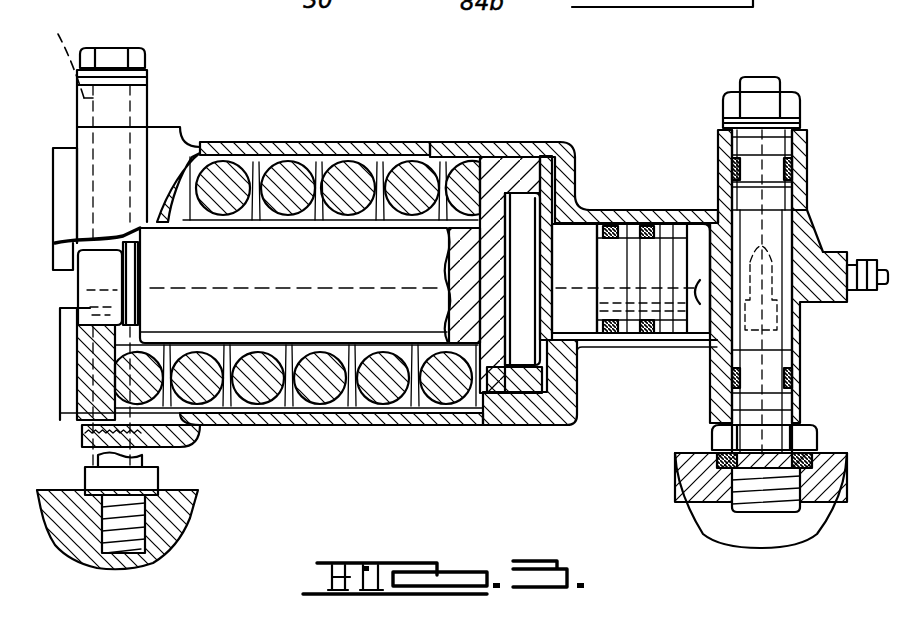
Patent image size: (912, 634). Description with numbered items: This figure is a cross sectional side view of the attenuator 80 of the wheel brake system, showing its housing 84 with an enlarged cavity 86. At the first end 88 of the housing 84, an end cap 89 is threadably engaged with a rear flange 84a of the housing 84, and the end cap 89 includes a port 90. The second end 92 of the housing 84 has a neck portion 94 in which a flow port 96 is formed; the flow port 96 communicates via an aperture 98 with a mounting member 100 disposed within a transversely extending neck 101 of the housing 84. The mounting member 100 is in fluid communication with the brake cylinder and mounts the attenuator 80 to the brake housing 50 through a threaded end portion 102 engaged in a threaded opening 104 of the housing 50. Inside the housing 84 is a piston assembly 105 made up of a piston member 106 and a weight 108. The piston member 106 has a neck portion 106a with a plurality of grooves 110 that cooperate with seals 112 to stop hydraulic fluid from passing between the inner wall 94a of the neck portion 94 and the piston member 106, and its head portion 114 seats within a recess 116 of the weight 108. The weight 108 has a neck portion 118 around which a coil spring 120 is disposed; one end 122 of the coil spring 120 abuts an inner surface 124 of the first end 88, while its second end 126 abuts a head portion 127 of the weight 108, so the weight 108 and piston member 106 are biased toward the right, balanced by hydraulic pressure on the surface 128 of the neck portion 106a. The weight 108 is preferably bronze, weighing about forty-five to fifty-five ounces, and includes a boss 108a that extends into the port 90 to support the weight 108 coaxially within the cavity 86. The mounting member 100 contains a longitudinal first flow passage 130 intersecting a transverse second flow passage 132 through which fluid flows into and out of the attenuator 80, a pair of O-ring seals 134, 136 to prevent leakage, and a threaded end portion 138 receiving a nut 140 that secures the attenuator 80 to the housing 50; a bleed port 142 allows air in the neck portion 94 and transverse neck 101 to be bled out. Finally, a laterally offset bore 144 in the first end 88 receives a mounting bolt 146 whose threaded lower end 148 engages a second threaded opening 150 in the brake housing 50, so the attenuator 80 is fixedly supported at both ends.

The housing 50 is at (63, 540).
The attenuator 80 is at (240, 120).
The housing 84 is at (328, 146).
The rear flange 84a is at (147, 445).
The enlarged cavity 86 is at (264, 168).
The first end 88 is at (58, 163).
The end cap 89 is at (98, 372).
The port 90 is at (104, 323).
The second end 92 is at (577, 228).
The neck portion 94 is at (642, 214).
The inner wall 94a is at (585, 312).
The flow port 96 is at (688, 222).
The aperture 98 is at (710, 280).
The mounting member 100 is at (788, 222).
The transversely extending neck 101 is at (803, 172).
The threaded end portion 102 is at (738, 513).
The threaded opening 104 is at (737, 477).
The piston assembly 105 is at (497, 394).
The piston member 106 is at (585, 330).
The neck portion 106a is at (627, 335).
The weight 108 is at (318, 398).
The boss 108a is at (107, 272).
The grooves 110 is at (610, 223).
The seals 112 is at (613, 221).
The head portion 114 is at (519, 205).
The recess 116 is at (513, 217).
The neck portion 118 is at (266, 293).
The coil spring 120 is at (370, 425).
The one end 122 is at (82, 433).
The inner surface 124 is at (138, 348).
The second end 126 is at (442, 413).
The head portion 127 is at (467, 270).
The surface 128 is at (692, 265).
The first flow passage 130 is at (820, 335).
The second flow passage 132 is at (812, 316).
The O-ring seal 134 is at (806, 160).
The O-ring seal 136 is at (797, 378).
The threaded end portion 138 is at (746, 77).
The nut 140 is at (726, 106).
The bleed port 142 is at (857, 260).
The laterally offset bore 144 is at (60, 53).
The mounting bolt 146 is at (110, 55).
The threaded lower end 148 is at (120, 537).
The second threaded opening 150 is at (140, 521).